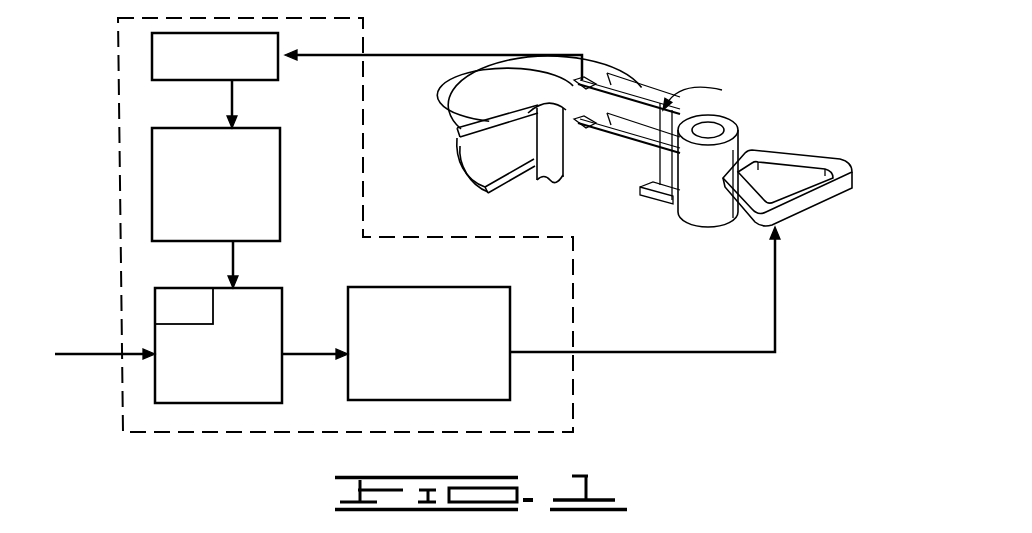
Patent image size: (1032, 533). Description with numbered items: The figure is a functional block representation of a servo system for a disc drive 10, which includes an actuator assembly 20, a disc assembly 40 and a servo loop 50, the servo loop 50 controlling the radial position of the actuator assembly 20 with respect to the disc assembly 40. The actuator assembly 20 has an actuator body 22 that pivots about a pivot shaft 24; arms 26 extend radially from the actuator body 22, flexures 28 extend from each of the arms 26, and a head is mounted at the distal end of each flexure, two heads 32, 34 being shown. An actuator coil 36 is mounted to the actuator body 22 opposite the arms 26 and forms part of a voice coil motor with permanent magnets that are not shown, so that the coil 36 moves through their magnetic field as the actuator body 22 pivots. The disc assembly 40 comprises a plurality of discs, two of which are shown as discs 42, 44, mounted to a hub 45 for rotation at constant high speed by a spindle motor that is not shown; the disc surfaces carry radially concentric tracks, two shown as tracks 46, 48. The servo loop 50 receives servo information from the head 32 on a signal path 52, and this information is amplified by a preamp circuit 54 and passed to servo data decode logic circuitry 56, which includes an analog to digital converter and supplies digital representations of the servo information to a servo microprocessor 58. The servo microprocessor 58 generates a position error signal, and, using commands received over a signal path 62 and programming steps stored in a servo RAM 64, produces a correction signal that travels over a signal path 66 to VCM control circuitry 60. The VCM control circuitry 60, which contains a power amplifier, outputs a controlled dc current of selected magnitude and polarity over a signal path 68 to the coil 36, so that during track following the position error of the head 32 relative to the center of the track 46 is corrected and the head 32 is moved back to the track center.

The disc drive 10 is at (90, 68).
The actuator assembly 20 is at (721, 162).
The actuator body 22 is at (747, 160).
The pivot shaft 24 is at (709, 127).
The arms 26 is at (711, 95).
The flexures 28 is at (631, 103).
The head 32 is at (598, 78).
The head 34 is at (630, 95).
The actuator coil 36 is at (805, 213).
The disc assembly 40 is at (521, 122).
The disc 42 is at (521, 82).
The disc 44 is at (471, 180).
The hub 45 is at (550, 123).
The track 46 is at (508, 90).
The track 48 is at (480, 160).
The servo loop 50 is at (578, 320).
The signal path 52 is at (380, 56).
The preamp circuit 54 is at (152, 57).
The servo data decode logic circuitry 56 is at (272, 128).
The servo microprocessor 58 is at (181, 309).
The VCM control circuitry 60 is at (415, 287).
The signal path 62 is at (110, 354).
The servo RAM 64 is at (180, 288).
The signal path 66 is at (300, 351).
The signal path 68 is at (678, 352).